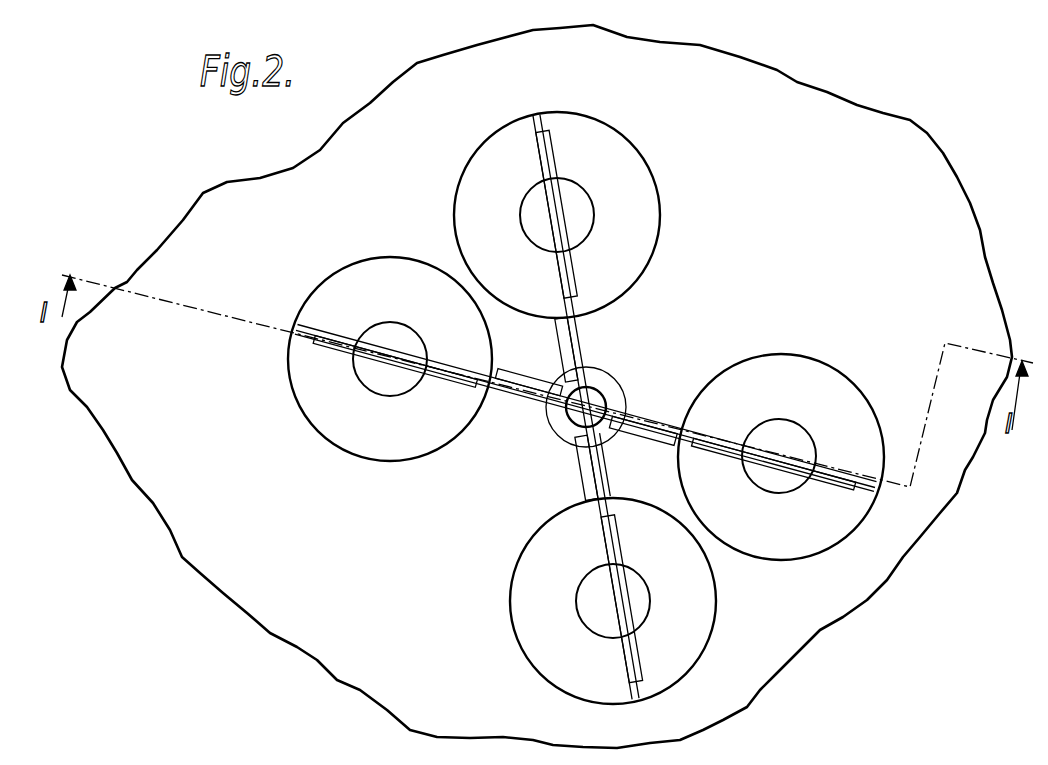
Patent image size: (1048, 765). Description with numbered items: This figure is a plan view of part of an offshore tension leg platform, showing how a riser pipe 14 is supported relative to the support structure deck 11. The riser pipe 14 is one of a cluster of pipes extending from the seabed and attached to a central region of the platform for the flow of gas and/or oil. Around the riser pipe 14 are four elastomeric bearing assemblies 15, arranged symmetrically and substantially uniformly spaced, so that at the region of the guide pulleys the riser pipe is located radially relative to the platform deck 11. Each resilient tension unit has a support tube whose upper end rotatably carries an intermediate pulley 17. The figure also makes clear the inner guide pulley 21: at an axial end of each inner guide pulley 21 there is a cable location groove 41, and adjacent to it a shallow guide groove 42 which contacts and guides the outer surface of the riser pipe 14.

The support structure deck 11 is at (302, 178).
The riser pipe 14 is at (602, 385).
The elastomeric bearing assembly 15 is at (403, 272).
The intermediate pulley 17 is at (857, 487).
The inner guide pulley 21 is at (552, 340).
The cable location groove 41 is at (565, 428).
The shallow guide groove 42 is at (527, 413).